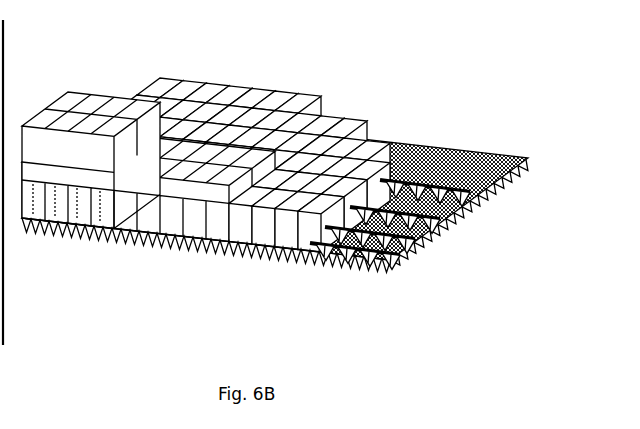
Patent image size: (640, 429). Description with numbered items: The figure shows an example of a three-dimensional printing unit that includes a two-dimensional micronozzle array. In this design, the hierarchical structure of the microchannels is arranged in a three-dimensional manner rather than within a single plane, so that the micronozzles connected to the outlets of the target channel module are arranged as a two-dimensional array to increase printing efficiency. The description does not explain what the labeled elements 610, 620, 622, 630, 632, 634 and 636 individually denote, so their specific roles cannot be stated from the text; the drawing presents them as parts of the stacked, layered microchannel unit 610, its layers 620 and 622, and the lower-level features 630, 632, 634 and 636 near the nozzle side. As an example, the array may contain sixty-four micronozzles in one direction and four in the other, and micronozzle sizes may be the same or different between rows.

The block 610 is at (86, 157).
The layer 620 is at (32, 174).
The base layer 622 is at (102, 192).
The post 630 is at (33, 192).
The post 632 is at (54, 194).
The post 634 is at (77, 195).
The post 636 is at (99, 203).